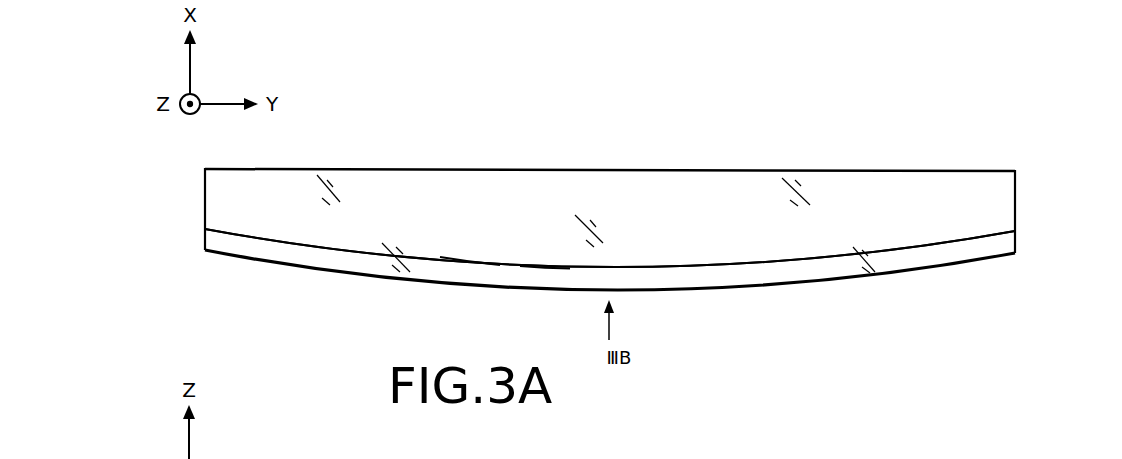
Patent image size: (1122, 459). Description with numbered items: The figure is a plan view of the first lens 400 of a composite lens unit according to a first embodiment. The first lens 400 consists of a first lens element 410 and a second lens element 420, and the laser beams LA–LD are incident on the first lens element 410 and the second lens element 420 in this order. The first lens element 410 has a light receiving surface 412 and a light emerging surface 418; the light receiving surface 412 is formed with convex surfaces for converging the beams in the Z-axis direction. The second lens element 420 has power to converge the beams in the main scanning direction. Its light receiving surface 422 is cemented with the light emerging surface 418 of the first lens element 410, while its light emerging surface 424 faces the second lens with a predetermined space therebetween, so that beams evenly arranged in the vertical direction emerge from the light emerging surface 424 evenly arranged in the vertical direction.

The first lens 400 is at (647, 216).
The first lens element 410 is at (647, 281).
The light receiving surface 412 is at (752, 291).
The light emerging surface 418 is at (482, 261).
The second lens element 420 is at (647, 182).
The light receiving surface 422 is at (538, 268).
The light emerging surface 424 is at (836, 170).